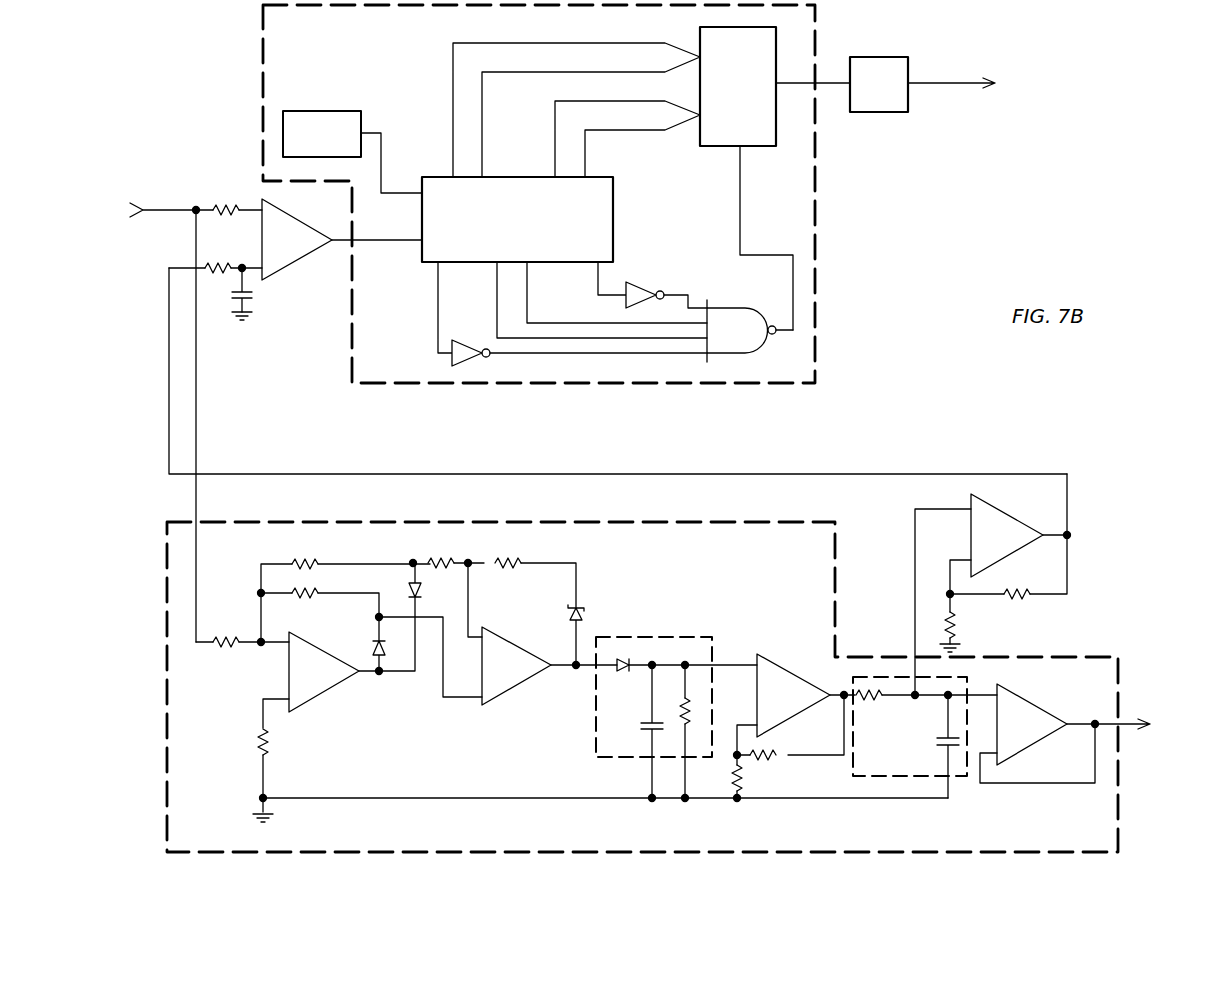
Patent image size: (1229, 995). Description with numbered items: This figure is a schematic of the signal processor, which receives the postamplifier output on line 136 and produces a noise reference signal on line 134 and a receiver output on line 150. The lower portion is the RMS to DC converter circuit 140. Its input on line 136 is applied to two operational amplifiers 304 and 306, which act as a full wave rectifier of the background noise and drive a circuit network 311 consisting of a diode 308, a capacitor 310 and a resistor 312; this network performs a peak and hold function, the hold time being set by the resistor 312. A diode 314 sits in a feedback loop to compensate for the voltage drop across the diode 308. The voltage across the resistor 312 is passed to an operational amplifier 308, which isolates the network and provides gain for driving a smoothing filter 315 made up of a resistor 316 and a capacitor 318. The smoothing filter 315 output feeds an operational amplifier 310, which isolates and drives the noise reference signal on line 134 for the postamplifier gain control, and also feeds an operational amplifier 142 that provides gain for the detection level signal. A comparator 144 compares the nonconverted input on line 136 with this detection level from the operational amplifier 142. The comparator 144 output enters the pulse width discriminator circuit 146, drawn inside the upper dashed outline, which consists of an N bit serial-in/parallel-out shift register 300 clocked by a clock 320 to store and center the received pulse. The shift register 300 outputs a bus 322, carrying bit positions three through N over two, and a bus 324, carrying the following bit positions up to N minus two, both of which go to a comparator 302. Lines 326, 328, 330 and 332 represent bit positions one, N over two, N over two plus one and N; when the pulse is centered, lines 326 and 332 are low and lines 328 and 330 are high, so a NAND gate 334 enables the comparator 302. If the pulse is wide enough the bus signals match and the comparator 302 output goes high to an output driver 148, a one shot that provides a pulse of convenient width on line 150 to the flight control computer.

The line 134 is at (1125, 720).
The line 136 is at (166, 208).
The RMS to DC converter circuit 140 is at (761, 517).
The gain stage 142 is at (1014, 545).
The comparator 144 is at (306, 251).
The pulse width discriminator circuit 146 is at (262, 83).
The output driver 148 is at (897, 94).
The line 150 is at (940, 81).
The shift register 300 is at (535, 231).
The comparator 302 is at (756, 96).
The operational amplifier 304 is at (330, 683).
The operational amplifier 306 is at (523, 677).
The diode 308 is at (801, 706).
The capacitor 310 is at (650, 736).
The circuit network 311 is at (655, 635).
The resistor 312 is at (690, 710).
The diode 314 is at (584, 613).
The smoothing filter 315 is at (850, 774).
The resistor 316 is at (874, 701).
The capacitor 318 is at (946, 751).
The clock 320 is at (337, 112).
The bus 322 is at (470, 88).
The bus 324 is at (573, 138).
The line 326 is at (434, 300).
The line 328 is at (497, 306).
The line 330 is at (531, 301).
The line 332 is at (600, 288).
The NAND gate 334 is at (730, 326).